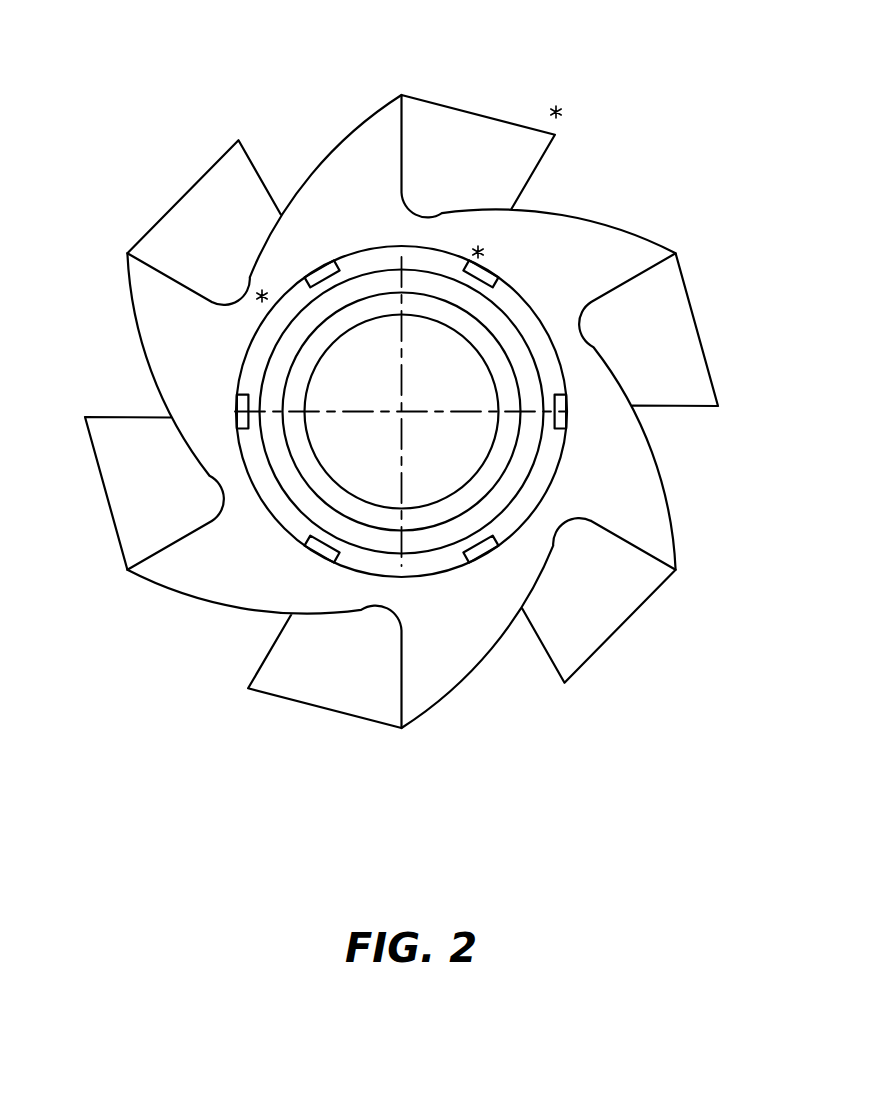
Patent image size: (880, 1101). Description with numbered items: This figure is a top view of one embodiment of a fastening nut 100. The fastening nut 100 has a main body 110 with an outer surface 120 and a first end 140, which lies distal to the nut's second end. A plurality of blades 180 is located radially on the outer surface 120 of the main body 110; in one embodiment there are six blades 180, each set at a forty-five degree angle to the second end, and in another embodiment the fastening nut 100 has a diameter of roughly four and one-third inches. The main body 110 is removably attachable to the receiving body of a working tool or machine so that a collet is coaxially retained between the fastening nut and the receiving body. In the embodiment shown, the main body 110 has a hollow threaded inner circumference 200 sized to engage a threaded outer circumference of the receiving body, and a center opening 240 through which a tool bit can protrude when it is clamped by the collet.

The fastening nut 100 is at (386, 365).
The main body 110 is at (243, 374).
The outer surface 120 is at (295, 538).
The first end 140 is at (500, 523).
The blades 180 is at (192, 220).
The hollow threaded inner circumference 200 is at (497, 478).
The center opening 240 is at (432, 360).